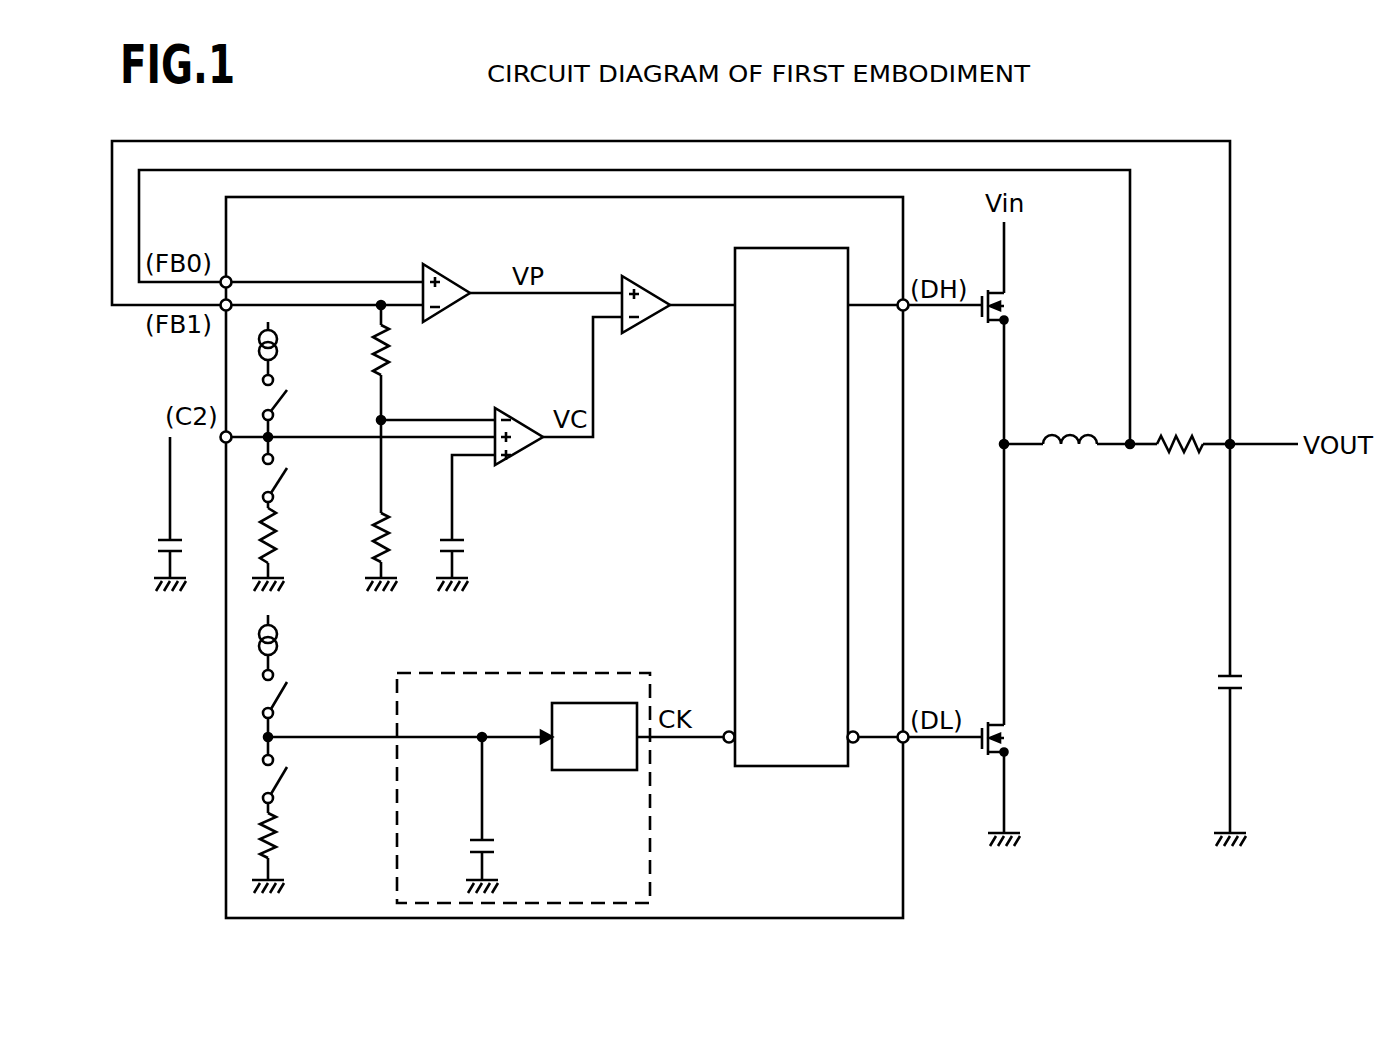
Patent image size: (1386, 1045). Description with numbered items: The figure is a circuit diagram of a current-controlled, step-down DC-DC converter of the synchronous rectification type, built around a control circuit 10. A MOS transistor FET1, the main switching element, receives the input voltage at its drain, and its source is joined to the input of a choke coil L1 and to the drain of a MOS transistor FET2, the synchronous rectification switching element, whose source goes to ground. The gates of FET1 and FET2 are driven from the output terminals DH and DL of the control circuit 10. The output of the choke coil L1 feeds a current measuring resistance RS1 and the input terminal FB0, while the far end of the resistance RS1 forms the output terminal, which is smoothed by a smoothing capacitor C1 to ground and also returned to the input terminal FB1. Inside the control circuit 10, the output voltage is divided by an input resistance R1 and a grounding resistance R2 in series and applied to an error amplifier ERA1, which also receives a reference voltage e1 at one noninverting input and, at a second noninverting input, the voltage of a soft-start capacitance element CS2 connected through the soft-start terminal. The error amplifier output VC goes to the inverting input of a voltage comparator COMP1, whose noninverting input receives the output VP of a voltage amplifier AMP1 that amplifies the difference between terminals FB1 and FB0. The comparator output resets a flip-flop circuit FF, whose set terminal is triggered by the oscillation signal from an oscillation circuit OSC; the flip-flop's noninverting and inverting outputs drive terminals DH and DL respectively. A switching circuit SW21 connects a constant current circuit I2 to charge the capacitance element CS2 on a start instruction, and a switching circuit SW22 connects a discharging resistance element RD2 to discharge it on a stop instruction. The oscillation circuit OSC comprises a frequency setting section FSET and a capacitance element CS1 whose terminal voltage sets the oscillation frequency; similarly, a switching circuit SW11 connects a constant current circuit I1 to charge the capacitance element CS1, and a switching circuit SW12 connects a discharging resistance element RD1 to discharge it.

The control circuit 10 is at (789, 197).
The voltage amplifier AMP1 is at (450, 270).
The voltage comparator COMP1 is at (653, 256).
The error amplifier ERA1 is at (520, 420).
The flip-flop circuit FF is at (797, 248).
The oscillation circuit OSC is at (530, 769).
The frequency setting section FSET is at (594, 736).
The capacitance element CS1 is at (456, 815).
The soft-start capacitance element CS2 is at (144, 514).
The input resistance R1 is at (399, 362).
The grounding resistance R2 is at (395, 505).
The discharging resistance element RD1 is at (296, 848).
The discharging resistance element RD2 is at (296, 546).
The constant current circuit I1 is at (282, 647).
The constant current circuit I2 is at (282, 353).
The switching circuit SW11 is at (309, 709).
The switching circuit SW12 is at (309, 774).
The switching circuit SW21 is at (309, 413).
The switching circuit SW22 is at (309, 474).
The reference voltage e1 is at (468, 523).
The MOS transistor FET1 is at (990, 307).
The MOS transistor FET2 is at (990, 739).
The choke coil L1 is at (1067, 421).
The current measuring resistance RS1 is at (1180, 425).
The smoothing capacitor C1 is at (1215, 645).